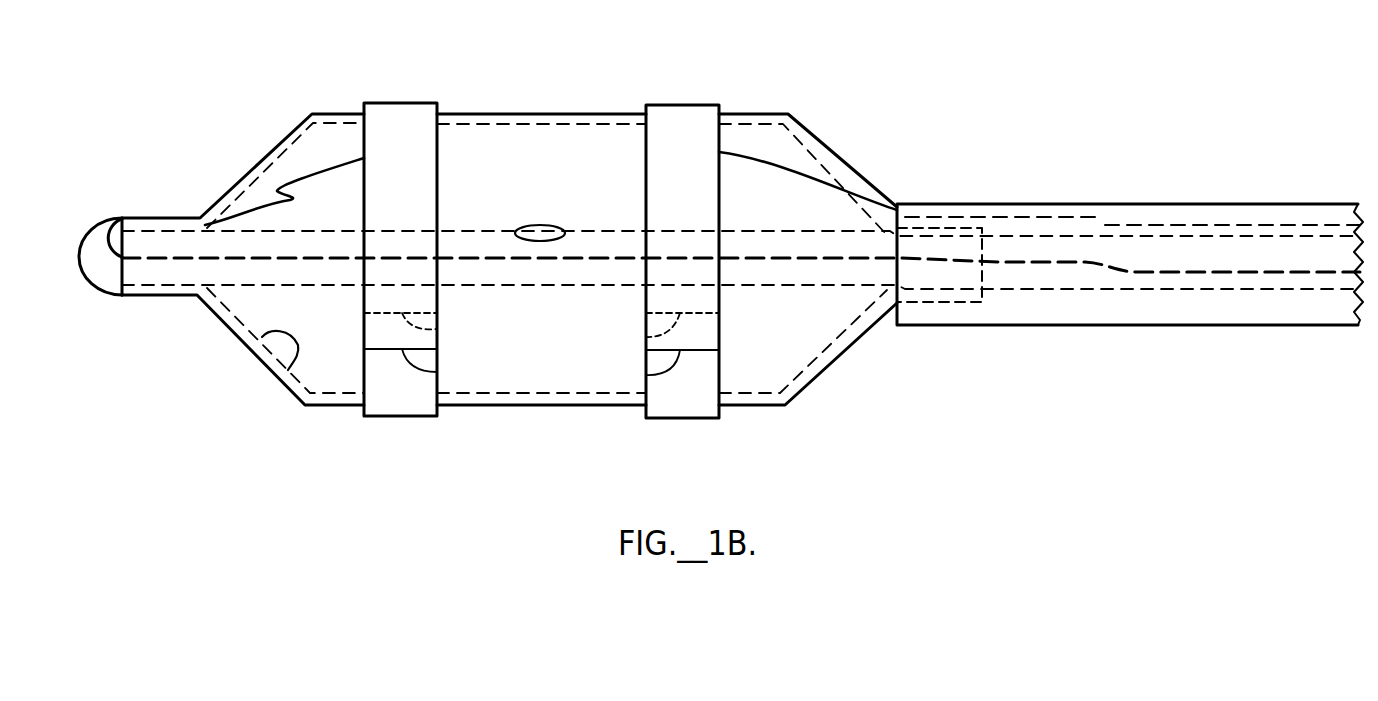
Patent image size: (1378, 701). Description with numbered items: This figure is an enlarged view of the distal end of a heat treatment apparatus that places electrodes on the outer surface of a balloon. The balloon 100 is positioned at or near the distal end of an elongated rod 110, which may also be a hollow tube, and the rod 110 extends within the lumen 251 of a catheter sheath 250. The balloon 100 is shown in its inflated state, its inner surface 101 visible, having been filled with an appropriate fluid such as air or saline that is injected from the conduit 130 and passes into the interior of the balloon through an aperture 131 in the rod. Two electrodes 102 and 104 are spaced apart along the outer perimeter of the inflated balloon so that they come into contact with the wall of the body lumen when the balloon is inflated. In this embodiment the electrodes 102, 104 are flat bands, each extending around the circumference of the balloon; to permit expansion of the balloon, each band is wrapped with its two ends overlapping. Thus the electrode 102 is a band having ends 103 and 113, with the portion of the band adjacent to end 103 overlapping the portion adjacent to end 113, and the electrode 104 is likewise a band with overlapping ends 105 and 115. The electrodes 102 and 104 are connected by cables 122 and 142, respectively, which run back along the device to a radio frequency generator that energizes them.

The balloon 100 is at (302, 402).
The inner surface 101 is at (262, 337).
The electrode 102 is at (400, 103).
The end 103 is at (437, 372).
The electrode 104 is at (690, 117).
The end 105 is at (646, 375).
The elongated rod 110 is at (1008, 238).
The end 113 is at (437, 329).
The end 115 is at (646, 337).
The cable 122 is at (140, 222).
The conduit 130 is at (1112, 252).
The aperture 131 is at (540, 225).
The cable 142 is at (787, 162).
The catheter sheath 250 is at (1083, 325).
The lumen 251 is at (1128, 315).